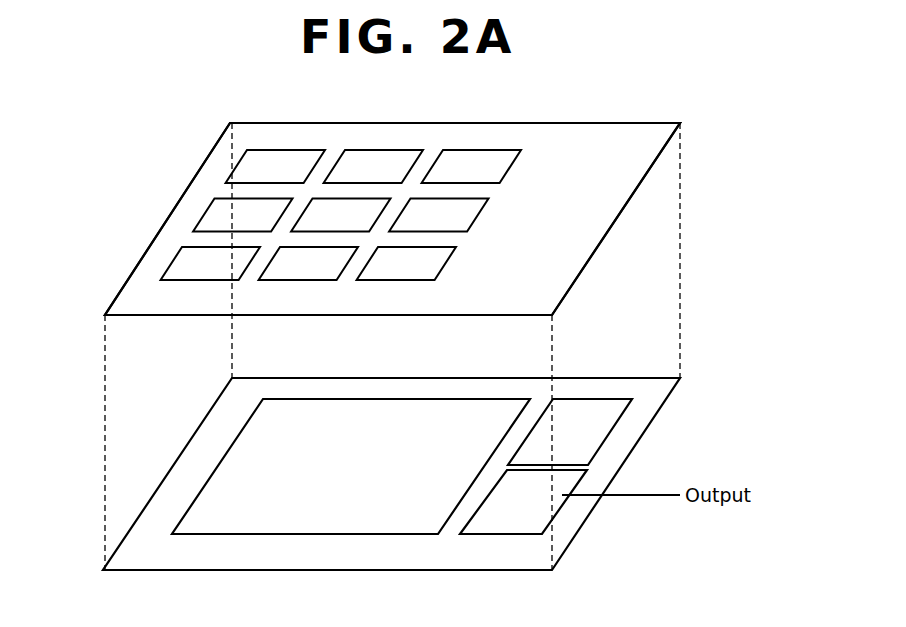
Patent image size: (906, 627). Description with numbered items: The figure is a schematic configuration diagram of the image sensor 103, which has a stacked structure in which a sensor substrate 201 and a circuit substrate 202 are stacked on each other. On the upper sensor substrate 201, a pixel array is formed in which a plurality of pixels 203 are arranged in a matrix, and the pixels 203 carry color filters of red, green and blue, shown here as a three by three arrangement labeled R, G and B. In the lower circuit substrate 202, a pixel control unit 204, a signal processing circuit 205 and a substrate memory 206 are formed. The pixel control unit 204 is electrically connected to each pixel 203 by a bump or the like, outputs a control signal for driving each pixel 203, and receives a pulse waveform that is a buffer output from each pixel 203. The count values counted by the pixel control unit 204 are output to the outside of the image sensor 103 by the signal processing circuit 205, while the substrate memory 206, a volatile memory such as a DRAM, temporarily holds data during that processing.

The image sensor 103 is at (165, 222).
The sensor substrate 201 is at (563, 132).
The circuit substrate 202 is at (597, 377).
The pixel 203 is at (300, 150).
The pixel control unit 204 is at (232, 448).
The signal processing circuit 205 is at (560, 510).
The substrate memory 206 is at (617, 419).